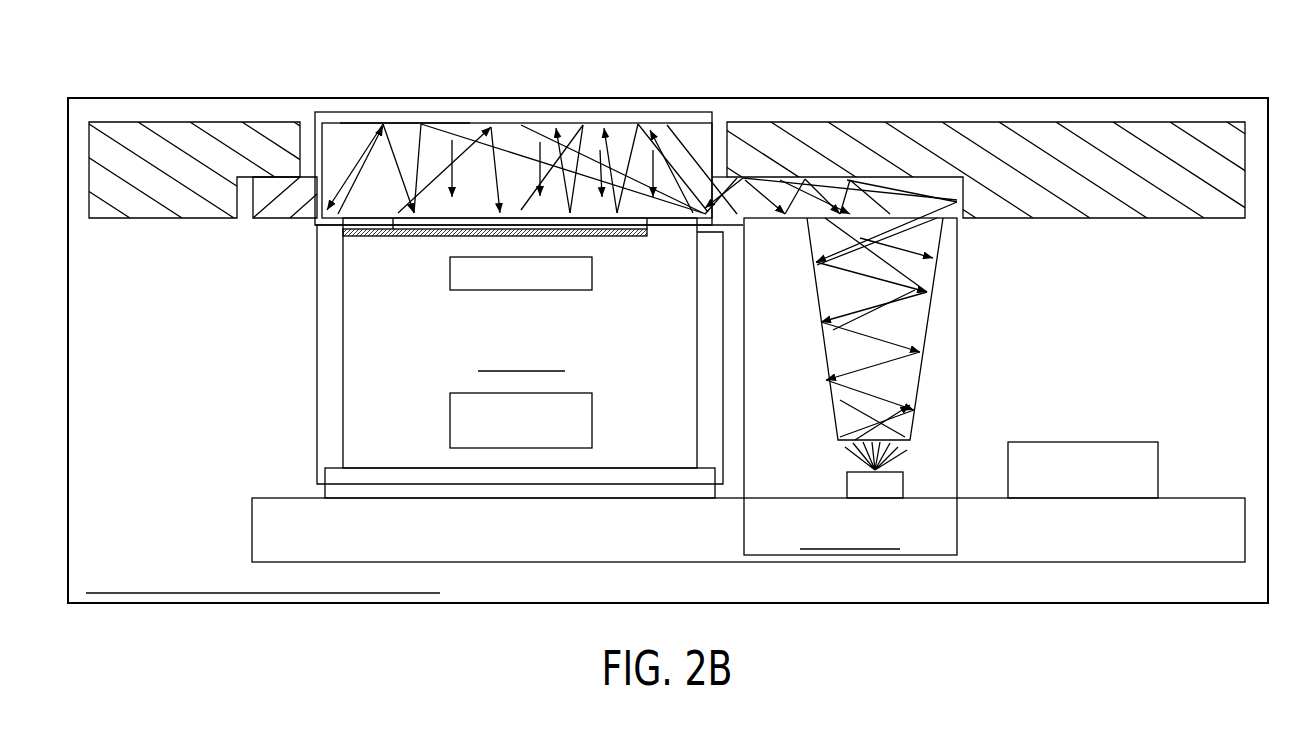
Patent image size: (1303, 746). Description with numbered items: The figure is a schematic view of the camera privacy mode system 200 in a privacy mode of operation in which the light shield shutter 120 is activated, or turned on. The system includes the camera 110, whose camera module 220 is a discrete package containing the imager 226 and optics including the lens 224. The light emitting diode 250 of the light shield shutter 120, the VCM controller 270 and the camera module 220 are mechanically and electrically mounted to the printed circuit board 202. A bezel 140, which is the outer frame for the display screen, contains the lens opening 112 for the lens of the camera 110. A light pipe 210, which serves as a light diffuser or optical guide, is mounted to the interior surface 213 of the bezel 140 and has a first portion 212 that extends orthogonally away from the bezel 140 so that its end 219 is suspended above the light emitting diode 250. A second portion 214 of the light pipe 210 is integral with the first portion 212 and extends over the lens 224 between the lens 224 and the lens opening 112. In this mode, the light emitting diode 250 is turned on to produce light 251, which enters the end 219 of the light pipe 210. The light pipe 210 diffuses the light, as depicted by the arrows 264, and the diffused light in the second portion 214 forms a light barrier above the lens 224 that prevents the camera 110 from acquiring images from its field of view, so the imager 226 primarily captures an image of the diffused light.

The camera privacy mode system 200 is at (860, 50).
The camera 110 is at (316, 303).
The lens opening 112 is at (720, 152).
The light shield shutter 120 is at (958, 308).
The bezel 140 is at (953, 123).
The printed circuit board 202 is at (1065, 562).
The light pipe 210 is at (520, 122).
The first portion 212 is at (927, 330).
The interior surface 213 is at (835, 170).
The second portion 214 is at (394, 122).
The end 219 is at (918, 392).
The camera module 220 is at (343, 350).
The lens 224 is at (450, 270).
The imager 226 is at (450, 408).
The light emitting diode 250 is at (847, 482).
The light 251 is at (903, 472).
The arrows 264 is at (352, 160).
The VCM controller 270 is at (1085, 442).